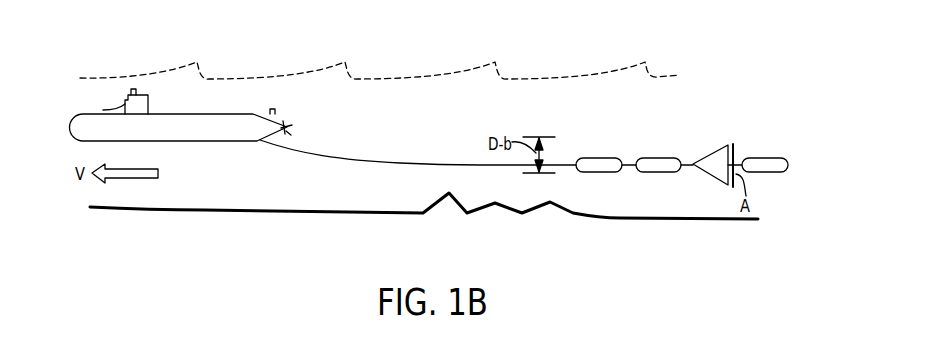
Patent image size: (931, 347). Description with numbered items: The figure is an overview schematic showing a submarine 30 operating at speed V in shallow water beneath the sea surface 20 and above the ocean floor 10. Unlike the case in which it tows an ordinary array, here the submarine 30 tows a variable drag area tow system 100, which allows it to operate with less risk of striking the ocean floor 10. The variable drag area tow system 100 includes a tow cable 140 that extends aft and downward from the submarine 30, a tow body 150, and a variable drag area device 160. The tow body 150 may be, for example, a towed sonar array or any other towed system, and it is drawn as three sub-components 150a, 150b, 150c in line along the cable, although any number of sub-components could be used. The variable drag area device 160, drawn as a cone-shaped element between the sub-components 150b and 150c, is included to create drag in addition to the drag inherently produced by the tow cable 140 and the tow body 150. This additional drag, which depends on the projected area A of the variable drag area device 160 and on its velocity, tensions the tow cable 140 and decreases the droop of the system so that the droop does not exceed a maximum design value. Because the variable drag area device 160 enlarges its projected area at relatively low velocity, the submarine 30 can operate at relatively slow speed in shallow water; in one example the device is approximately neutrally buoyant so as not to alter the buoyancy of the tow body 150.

The ocean floor 10 is at (207, 210).
The sea surface 20 is at (249, 79).
The submarine 30 is at (83, 113).
The variable drag area tow system 100 is at (788, 233).
The tow cable 140 is at (378, 159).
The tow body 150 is at (687, 161).
The tow body sub-component 150a is at (613, 173).
The tow body sub-component 150b is at (658, 173).
The tow body sub-component 150c is at (765, 173).
The variable drag area device 160 is at (713, 153).